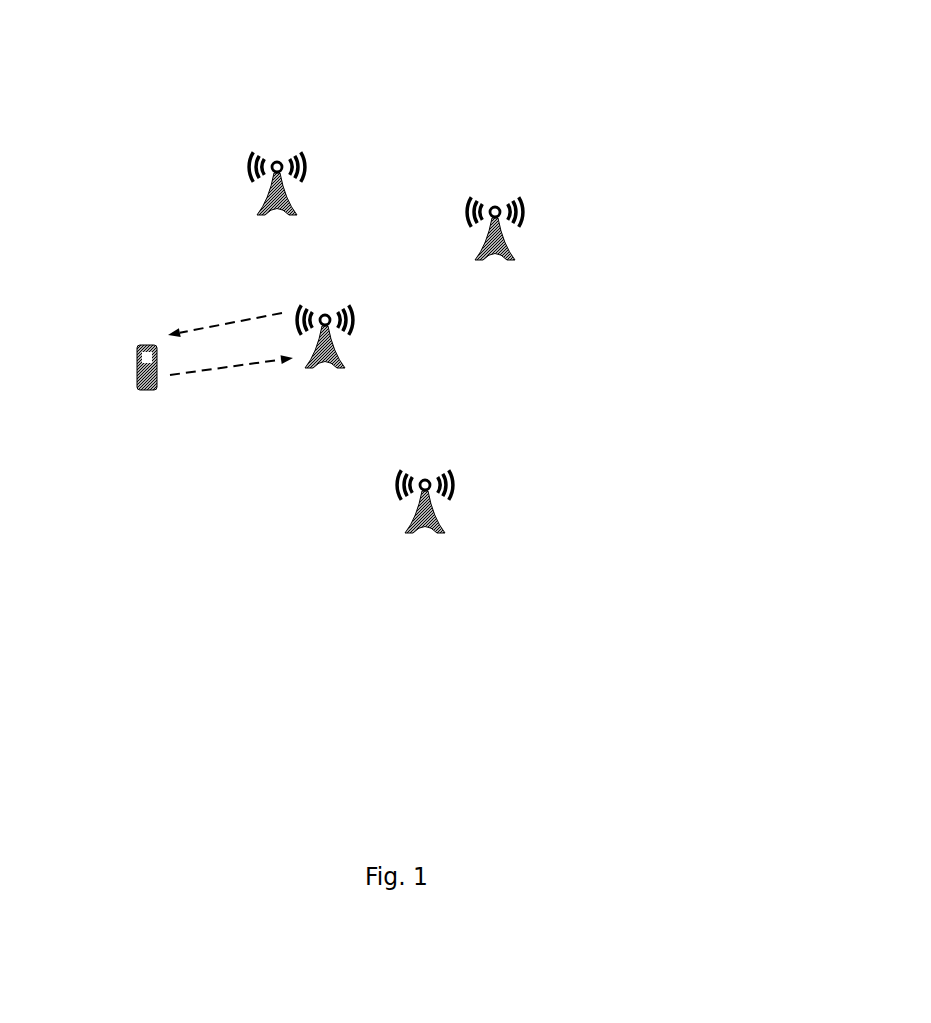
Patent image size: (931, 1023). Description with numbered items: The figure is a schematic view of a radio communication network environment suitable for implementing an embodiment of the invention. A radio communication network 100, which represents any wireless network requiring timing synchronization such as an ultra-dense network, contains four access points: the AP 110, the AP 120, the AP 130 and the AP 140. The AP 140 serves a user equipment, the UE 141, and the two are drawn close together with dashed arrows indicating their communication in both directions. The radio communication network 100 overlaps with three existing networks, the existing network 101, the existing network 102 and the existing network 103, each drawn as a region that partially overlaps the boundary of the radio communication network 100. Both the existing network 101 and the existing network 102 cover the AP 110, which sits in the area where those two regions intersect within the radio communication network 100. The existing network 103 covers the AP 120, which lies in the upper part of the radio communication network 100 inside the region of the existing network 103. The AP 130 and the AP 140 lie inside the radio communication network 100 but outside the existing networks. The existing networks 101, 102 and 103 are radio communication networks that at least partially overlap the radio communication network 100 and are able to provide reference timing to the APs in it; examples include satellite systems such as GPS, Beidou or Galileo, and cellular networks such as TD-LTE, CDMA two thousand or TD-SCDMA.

The radio communication network 100 is at (407, 342).
The existing network 101 is at (471, 597).
The existing network 102 is at (347, 565).
The existing network 103 is at (598, 179).
The AP 110 is at (428, 486).
The AP 120 is at (501, 212).
The AP 130 is at (289, 170).
The AP 140 is at (329, 325).
The UE 141 is at (190, 351).